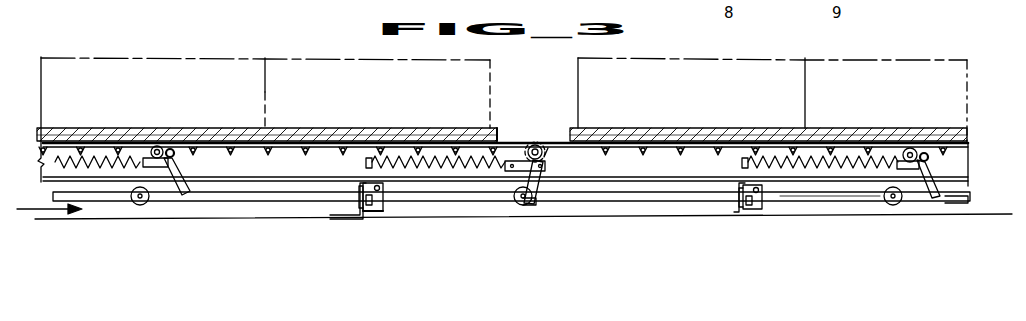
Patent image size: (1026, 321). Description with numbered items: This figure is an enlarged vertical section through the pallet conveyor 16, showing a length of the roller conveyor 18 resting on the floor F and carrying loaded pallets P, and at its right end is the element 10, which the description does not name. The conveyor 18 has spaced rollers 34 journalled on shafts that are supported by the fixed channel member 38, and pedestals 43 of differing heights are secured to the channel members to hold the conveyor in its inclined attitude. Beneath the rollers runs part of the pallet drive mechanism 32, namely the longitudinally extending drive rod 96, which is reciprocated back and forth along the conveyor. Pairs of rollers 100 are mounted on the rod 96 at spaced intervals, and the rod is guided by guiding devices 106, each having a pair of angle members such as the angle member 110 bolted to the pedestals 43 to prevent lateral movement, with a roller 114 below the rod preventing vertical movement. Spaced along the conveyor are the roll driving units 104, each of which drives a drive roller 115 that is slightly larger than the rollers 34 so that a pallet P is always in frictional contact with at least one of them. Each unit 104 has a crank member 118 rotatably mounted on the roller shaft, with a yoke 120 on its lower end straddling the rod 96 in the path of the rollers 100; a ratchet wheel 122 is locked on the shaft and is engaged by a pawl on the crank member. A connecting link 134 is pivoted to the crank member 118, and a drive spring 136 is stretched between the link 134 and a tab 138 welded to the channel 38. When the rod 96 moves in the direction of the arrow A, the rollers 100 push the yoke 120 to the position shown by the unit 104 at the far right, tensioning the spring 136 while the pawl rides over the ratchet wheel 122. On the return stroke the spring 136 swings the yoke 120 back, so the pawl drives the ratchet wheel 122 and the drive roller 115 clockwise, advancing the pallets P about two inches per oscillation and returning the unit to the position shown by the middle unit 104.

The latch arm / end fitting 10 is at (962, 112).
The pallet conveyor 16 is at (518, 131).
The roller conveyor 18 is at (622, 172).
The pallet drive mechanism 32 is at (292, 201).
The rollers 34 is at (420, 138).
The channel member 38 is at (275, 172).
The pedestals 43 is at (340, 215).
The drive rod 96 is at (845, 199).
The rollers 100 is at (142, 206).
The roll driving unit 104 is at (180, 165).
The guiding device 106 is at (386, 201).
The angle member 110 is at (373, 209).
The roller 114 is at (383, 216).
The drive roller 115 is at (528, 144).
The crank member 118 is at (548, 158).
The yoke 120 is at (180, 196).
The ratchet wheel 122 is at (150, 148).
The connecting link 134 is at (495, 134).
The drive spring 136 is at (100, 168).
The tab 138 is at (366, 167).
The arrow A is at (48, 207).
The pallet P is at (190, 129).
The floor F is at (447, 214).